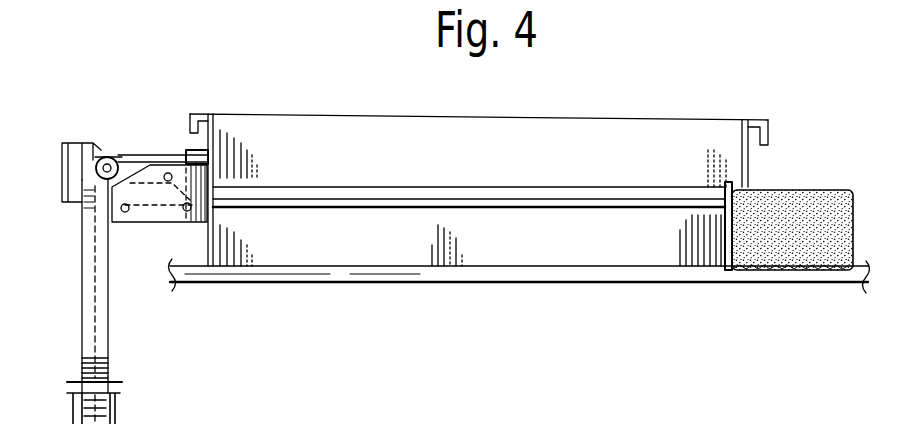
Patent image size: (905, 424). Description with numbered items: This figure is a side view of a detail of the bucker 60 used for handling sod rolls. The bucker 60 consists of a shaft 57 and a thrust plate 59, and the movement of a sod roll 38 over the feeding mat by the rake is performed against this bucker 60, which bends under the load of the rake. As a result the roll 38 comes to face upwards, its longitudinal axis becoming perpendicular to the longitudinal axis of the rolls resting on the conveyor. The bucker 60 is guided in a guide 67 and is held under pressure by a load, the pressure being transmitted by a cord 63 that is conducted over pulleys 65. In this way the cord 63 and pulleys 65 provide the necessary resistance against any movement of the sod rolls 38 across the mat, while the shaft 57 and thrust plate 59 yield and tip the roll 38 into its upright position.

The roll 38 is at (783, 205).
The shaft 57 is at (412, 187).
The thrust plate 59 is at (722, 238).
The bucker 60 is at (536, 176).
The cord 63 is at (118, 337).
The pulleys 65 is at (107, 156).
The guide 67 is at (148, 216).